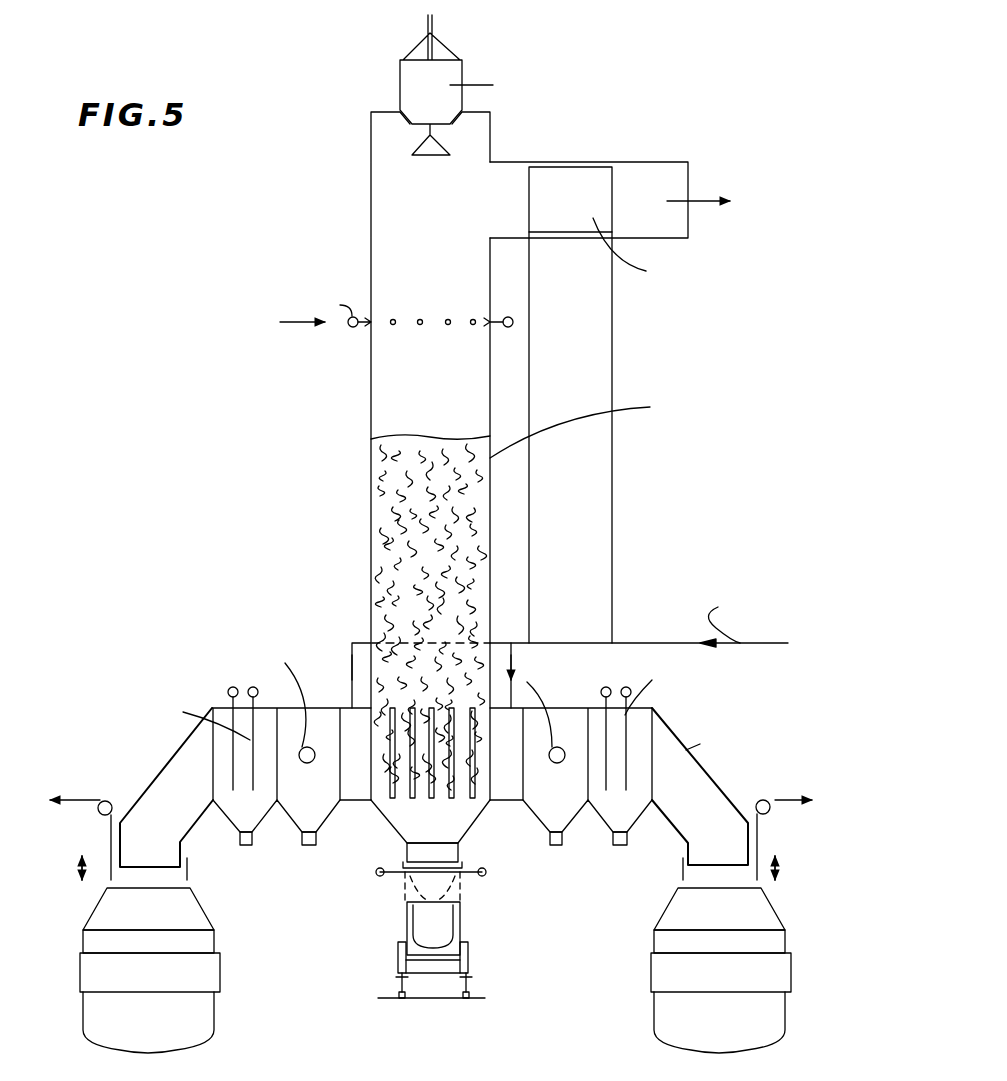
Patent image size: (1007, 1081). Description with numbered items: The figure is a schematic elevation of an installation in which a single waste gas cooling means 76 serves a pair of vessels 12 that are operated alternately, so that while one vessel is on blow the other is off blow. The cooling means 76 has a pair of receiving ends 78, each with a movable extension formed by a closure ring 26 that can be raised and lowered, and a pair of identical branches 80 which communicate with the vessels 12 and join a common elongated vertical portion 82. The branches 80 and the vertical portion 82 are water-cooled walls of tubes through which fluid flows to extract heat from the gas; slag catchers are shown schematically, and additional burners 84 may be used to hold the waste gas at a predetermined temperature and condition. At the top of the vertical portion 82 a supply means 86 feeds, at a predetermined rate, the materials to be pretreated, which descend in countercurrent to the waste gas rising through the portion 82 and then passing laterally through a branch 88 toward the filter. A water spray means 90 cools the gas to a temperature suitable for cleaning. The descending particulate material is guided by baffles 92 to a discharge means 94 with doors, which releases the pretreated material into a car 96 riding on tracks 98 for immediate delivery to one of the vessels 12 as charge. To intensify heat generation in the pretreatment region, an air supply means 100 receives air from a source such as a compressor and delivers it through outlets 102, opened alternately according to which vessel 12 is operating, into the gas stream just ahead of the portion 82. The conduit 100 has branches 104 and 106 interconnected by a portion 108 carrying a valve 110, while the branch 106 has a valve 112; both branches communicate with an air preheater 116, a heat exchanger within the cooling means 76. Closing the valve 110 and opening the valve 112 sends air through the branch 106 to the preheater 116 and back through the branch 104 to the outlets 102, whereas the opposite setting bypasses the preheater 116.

The vessel 12 is at (188, 1035).
The closure ring 26 is at (190, 875).
The waste gas cooling means 76 is at (360, 381).
The receiving end 78 is at (128, 863).
The branch 80 is at (297, 708).
The elongated vertical portion 82 is at (371, 535).
The burner 84 is at (301, 762).
The supply means 86 is at (388, 82).
The branch 88 is at (503, 162).
The water spray means 90 is at (346, 332).
The baffle 92 is at (390, 800).
The discharge means 94 is at (469, 855).
The car 96 is at (440, 920).
The tracks 98 is at (465, 1000).
The air supply means 100 is at (760, 650).
The outlet 102 is at (352, 655).
The branch 104 is at (529, 355).
The branch 106 is at (612, 349).
The portion 108 is at (538, 643).
The valve 110 is at (568, 644).
The valve 112 is at (614, 617).
The air preheater 116 is at (583, 205).